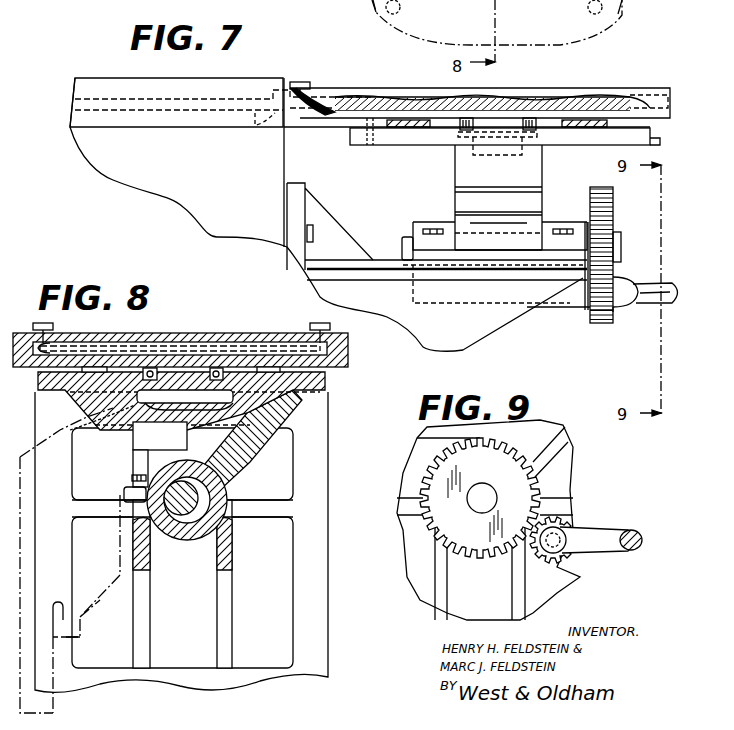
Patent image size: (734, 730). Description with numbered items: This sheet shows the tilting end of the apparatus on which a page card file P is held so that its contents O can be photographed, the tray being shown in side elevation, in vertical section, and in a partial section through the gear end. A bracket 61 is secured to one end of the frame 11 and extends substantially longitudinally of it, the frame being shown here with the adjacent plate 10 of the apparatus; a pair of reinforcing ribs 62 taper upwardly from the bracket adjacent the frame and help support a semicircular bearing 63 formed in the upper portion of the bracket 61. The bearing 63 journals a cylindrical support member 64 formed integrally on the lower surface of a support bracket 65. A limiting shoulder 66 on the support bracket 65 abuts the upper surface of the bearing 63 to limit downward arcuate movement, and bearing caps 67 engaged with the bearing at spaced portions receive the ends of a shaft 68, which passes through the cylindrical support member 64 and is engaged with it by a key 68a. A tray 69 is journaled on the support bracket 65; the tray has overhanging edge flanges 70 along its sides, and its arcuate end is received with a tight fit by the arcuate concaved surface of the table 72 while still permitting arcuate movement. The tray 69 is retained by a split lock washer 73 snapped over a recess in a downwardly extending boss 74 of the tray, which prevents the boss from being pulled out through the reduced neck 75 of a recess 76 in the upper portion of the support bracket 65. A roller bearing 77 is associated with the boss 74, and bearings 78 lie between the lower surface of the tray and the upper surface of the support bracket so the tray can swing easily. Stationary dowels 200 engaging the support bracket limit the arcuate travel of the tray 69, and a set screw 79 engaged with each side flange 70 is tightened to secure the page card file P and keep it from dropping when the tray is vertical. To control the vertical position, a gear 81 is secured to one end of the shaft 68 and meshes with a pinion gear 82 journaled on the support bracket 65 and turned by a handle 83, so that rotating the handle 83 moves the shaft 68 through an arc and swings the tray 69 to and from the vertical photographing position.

In FIG. 7, the support plate 10 is at (94, 79).
In FIG. 7, the frame 11 is at (120, 127).
In FIG. 7, the table 72 is at (272, 126).
In FIG. 7, the set screw 79 is at (300, 82).
In FIG. 8, the set screw 79 is at (34, 325).
In FIG. 7, the edge flange 70 is at (545, 96).
In FIG. 8, the edge flange 70 is at (48, 346).
In FIG. 7, the contents O is at (472, 100).
In FIG. 8, the contents O is at (145, 366).
In FIG. 7, the page card file P is at (410, 98).
In FIG. 8, the page card file P is at (215, 368).
In FIG. 7, the bearing 78 is at (584, 127).
In FIG. 8, the bearing 78 is at (100, 366).
In FIG. 7, the roller bearing 77 is at (530, 130).
In FIG. 8, the roller bearing 77 is at (222, 368).
In FIG. 7, the tray 69 is at (652, 120).
In FIG. 8, the tray 69 is at (346, 347).
In FIG. 7, the support bracket 65 is at (348, 146).
In FIG. 8, the support bracket 65 is at (312, 391).
In FIG. 7, the stationary dowel 200 is at (358, 128).
In FIG. 7, the boss 74 is at (522, 155).
In FIG. 8, the boss 74 is at (232, 408).
In FIG. 8, the split lock washer 73 is at (218, 401).
In FIG. 8, the reduced neck 75 is at (172, 399).
In FIG. 8, the recess 76 is at (135, 404).
In FIG. 7, the limiting shoulder 66 is at (462, 207).
In FIG. 8, the limiting shoulder 66 is at (135, 448).
In FIG. 7, the cylindrical support member 64 is at (530, 222).
In FIG. 8, the cylindrical support member 64 is at (124, 491).
In FIG. 7, the bearing cap 67 is at (421, 231).
In FIG. 8, the bearing cap 67 is at (132, 476).
In FIG. 7, the shaft 68 is at (402, 246).
In FIG. 8, the shaft 68 is at (212, 501).
In FIG. 9, the shaft 68 is at (470, 497).
In FIG. 8, the key 68a is at (242, 450).
In FIG. 8, the semicircular bearing 63 is at (142, 518).
In FIG. 7, the reinforcing rib 62 is at (541, 312).
In FIG. 8, the reinforcing rib 62 is at (149, 572).
In FIG. 9, the reinforcing rib 62 is at (512, 578).
In FIG. 7, the bracket 61 is at (340, 226).
In FIG. 8, the bracket 61 is at (295, 574).
In FIG. 9, the bracket 61 is at (559, 589).
In FIG. 7, the gear 81 is at (614, 222).
In FIG. 9, the gear 81 is at (540, 479).
In FIG. 7, the pinion gear 82 is at (611, 311).
In FIG. 9, the pinion gear 82 is at (563, 521).
In FIG. 7, the handle 83 is at (660, 281).
In FIG. 9, the handle 83 is at (611, 530).